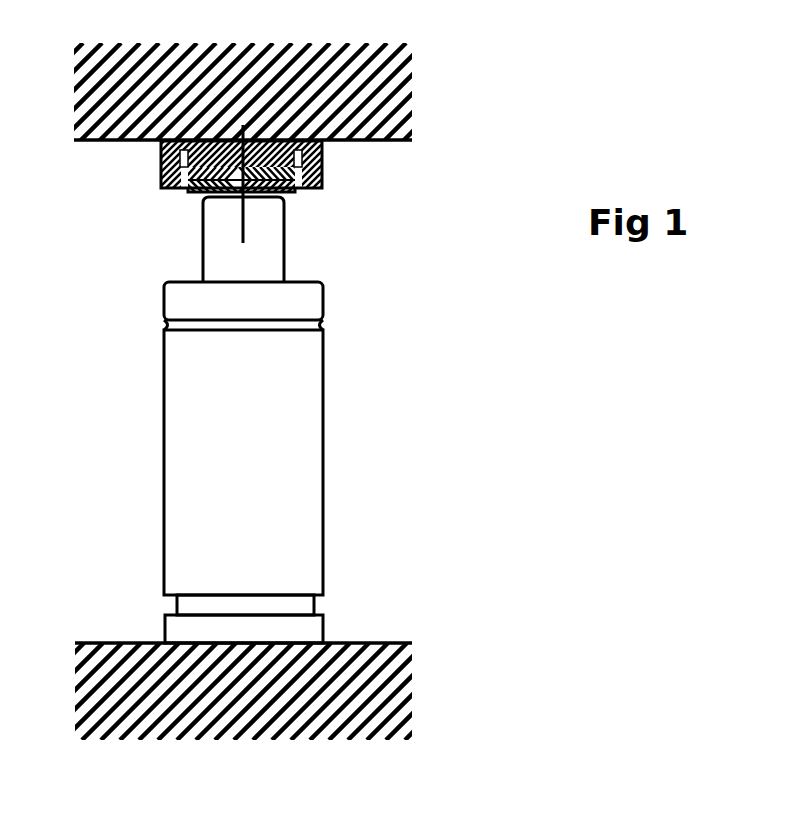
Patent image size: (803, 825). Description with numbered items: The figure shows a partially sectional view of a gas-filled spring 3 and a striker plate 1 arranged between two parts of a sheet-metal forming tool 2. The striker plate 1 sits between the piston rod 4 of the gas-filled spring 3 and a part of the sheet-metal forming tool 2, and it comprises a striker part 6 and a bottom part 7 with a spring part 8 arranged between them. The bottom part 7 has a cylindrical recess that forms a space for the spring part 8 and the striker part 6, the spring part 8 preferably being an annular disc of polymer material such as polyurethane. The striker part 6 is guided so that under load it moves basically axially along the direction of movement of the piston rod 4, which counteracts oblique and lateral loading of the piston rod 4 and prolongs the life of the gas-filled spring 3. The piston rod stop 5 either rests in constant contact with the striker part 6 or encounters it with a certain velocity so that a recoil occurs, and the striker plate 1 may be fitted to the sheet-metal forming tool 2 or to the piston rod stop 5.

The striker plate 1 is at (263, 207).
The sheet-metal forming tool 2 is at (436, 87).
The gas-filled spring 3 is at (420, 342).
The piston rod 4 is at (262, 259).
The piston rod stop 5 is at (257, 201).
The striker part 6 is at (192, 197).
The bottom part 7 is at (162, 160).
The spring part 8 is at (164, 173).